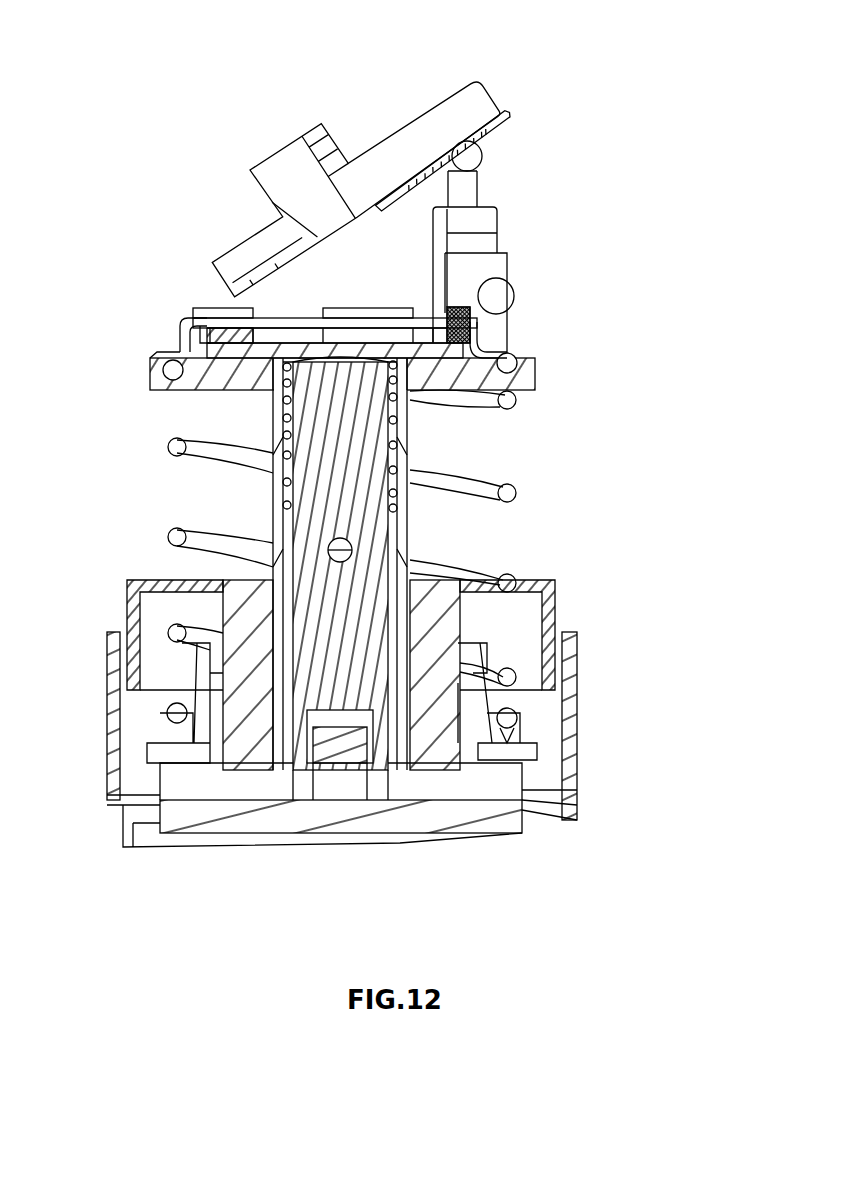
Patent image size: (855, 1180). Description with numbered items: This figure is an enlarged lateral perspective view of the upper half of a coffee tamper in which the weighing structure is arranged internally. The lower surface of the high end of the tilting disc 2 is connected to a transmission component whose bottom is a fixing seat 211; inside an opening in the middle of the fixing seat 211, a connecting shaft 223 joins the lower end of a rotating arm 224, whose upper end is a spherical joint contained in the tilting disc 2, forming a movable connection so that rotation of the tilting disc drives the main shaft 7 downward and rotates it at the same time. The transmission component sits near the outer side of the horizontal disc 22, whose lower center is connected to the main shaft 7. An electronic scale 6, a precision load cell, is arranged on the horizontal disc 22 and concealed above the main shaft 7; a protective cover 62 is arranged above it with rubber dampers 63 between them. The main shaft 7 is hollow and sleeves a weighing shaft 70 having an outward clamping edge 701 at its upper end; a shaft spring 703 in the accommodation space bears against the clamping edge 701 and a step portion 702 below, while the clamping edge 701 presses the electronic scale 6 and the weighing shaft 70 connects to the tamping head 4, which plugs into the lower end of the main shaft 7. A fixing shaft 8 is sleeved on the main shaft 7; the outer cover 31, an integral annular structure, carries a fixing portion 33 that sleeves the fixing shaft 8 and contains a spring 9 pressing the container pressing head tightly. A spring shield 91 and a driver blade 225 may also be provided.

The tilting disc 2 is at (400, 143).
The driver blade 225 is at (508, 116).
The rotating arm 224 is at (488, 224).
The fixing seat 211 is at (497, 268).
The connecting shaft 223 is at (498, 293).
The horizontal disc 22 is at (523, 377).
The electronic scale 6 is at (172, 352).
The rubber dampers 63 is at (220, 313).
The protective cover 62 is at (187, 335).
The clamping edge 701 is at (283, 377).
The step portion 702 is at (287, 513).
The shaft spring 703 is at (400, 443).
The main shaft 7 is at (402, 552).
The weighing shaft 70 is at (307, 531).
The spring 9 is at (200, 453).
The fixing shaft 8 is at (255, 708).
The spring shield 91 is at (547, 608).
The fixing portion 33 is at (520, 728).
The outer cover 31 is at (567, 792).
The tamping head 4 is at (393, 825).